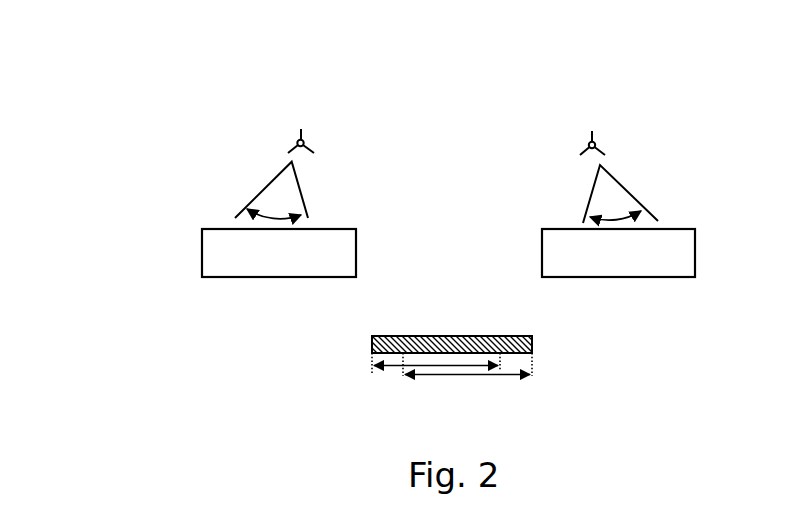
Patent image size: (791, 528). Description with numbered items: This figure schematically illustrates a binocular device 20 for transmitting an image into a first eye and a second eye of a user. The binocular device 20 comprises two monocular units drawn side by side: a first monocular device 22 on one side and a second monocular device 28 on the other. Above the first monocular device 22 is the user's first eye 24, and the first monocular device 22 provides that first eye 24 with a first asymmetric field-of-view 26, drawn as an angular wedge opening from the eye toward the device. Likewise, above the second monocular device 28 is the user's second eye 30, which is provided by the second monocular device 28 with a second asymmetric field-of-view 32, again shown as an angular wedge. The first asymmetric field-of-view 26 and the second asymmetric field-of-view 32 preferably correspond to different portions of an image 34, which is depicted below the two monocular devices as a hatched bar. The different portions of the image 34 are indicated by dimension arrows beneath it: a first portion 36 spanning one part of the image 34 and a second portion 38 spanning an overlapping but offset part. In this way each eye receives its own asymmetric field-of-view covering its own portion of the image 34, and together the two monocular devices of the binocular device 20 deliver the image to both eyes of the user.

The binocular device 20 is at (147, 116).
The first monocular device 22 is at (279, 253).
The first eye 24 is at (315, 136).
The first asymmetric field-of-view 26 is at (271, 190).
The second monocular device 28 is at (618, 253).
The second eye 30 is at (607, 137).
The second asymmetric field-of-view 32 is at (620, 194).
The image 34 is at (531, 336).
The first portion of the image 36 is at (393, 368).
The second portion of the image 38 is at (512, 377).